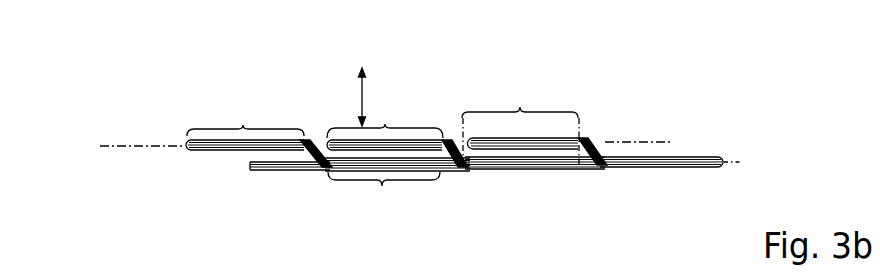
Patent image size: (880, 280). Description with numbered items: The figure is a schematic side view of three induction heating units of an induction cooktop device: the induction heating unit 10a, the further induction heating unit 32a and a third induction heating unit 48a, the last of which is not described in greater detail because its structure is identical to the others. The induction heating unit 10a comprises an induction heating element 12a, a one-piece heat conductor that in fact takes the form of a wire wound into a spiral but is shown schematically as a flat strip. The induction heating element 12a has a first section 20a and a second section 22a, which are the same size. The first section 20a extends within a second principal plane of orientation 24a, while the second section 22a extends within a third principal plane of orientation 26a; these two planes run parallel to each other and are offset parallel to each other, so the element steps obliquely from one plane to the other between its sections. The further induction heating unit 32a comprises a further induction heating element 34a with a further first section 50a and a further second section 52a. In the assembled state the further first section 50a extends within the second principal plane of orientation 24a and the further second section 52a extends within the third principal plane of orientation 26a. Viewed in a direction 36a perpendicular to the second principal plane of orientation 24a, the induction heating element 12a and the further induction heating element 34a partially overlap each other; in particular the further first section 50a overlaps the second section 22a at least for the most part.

The induction heating unit 10a is at (206, 86).
The induction heating element 12a is at (215, 151).
The first section 20a is at (243, 123).
The second section 22a is at (382, 187).
The second principal plane of orientation 24a is at (136, 144).
The third principal plane of orientation 26a is at (294, 171).
The further induction heating unit 32a is at (434, 86).
The further induction heating element 34a is at (484, 170).
The direction 36a is at (358, 98).
The third induction heating unit 48a is at (646, 83).
The further first section 50a is at (384, 123).
The further second section 52a is at (520, 106).